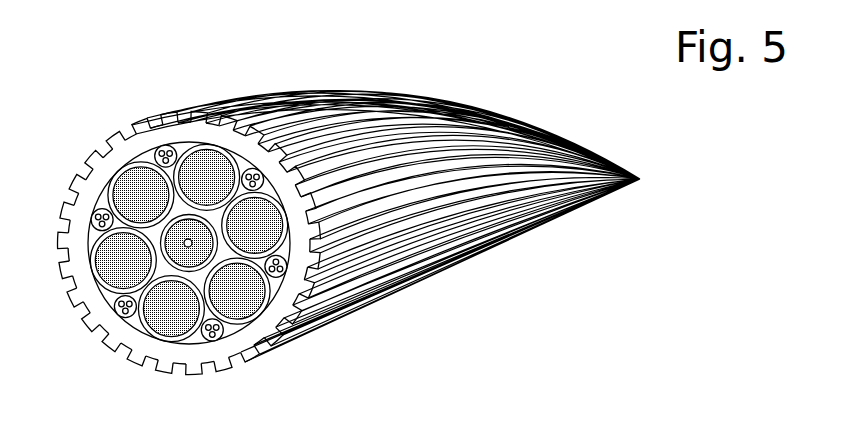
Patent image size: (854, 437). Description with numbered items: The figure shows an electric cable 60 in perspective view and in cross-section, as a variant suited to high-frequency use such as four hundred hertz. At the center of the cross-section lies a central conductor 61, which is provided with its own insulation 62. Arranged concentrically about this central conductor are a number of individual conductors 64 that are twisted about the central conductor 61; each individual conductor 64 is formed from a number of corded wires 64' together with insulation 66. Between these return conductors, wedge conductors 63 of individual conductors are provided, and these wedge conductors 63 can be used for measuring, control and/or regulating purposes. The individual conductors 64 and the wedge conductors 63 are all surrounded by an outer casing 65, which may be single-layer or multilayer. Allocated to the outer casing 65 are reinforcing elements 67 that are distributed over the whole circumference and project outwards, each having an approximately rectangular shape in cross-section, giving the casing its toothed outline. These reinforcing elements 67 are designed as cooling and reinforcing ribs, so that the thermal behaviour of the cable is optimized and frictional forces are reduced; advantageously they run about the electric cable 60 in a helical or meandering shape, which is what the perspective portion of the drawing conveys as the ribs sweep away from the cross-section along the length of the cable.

The electric cable 60 is at (168, 100).
The central conductor 61 is at (187, 247).
The insulation 62 is at (232, 263).
The wedge conductor 63 is at (104, 315).
The individual conductor 64 is at (223, 292).
The corded wire 64' is at (222, 119).
The outer casing 65 is at (100, 178).
The insulation 66 is at (228, 140).
The reinforcing element 67 is at (60, 207).